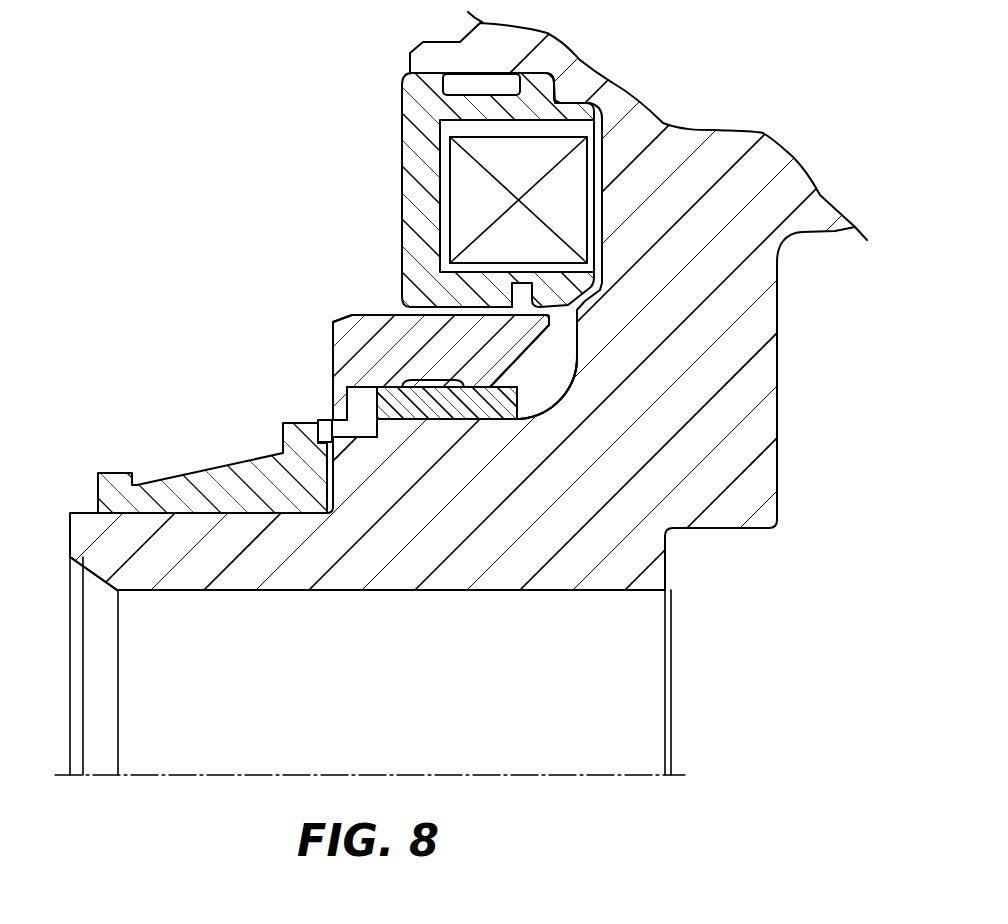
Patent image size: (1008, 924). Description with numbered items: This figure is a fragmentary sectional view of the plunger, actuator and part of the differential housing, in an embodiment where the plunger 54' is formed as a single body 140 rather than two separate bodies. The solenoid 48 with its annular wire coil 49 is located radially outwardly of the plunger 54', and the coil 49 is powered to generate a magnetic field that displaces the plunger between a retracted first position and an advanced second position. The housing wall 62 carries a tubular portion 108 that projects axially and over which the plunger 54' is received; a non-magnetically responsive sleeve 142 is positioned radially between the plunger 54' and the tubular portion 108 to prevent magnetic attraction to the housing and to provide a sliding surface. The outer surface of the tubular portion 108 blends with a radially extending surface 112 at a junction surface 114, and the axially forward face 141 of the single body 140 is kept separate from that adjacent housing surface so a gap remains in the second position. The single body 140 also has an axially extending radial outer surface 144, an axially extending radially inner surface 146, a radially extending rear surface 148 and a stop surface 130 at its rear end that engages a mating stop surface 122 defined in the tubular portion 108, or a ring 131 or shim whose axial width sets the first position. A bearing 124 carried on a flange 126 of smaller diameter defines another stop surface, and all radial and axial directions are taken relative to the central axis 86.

The solenoid 48 is at (390, 125).
The annular wire coil 49 is at (532, 160).
The plunger 54' is at (357, 342).
The housing wall 62 is at (702, 348).
The central axis 86 is at (160, 778).
The tubular portion 108 is at (420, 575).
The radially extending surface 112 is at (562, 345).
The junction surface 114 is at (560, 390).
The mating stop surface 122 is at (365, 429).
The bearing 124 is at (213, 490).
The flange 126 is at (160, 585).
The stop surface 130 is at (355, 418).
The ring 131 is at (327, 424).
The single body 140 is at (390, 347).
The axially forward face 141 is at (578, 308).
The non-magnetically responsive sleeve 142 is at (411, 425).
The radial outer surface 144 is at (412, 303).
The radially inner surface 146 is at (461, 393).
The rear surface 148 is at (333, 338).